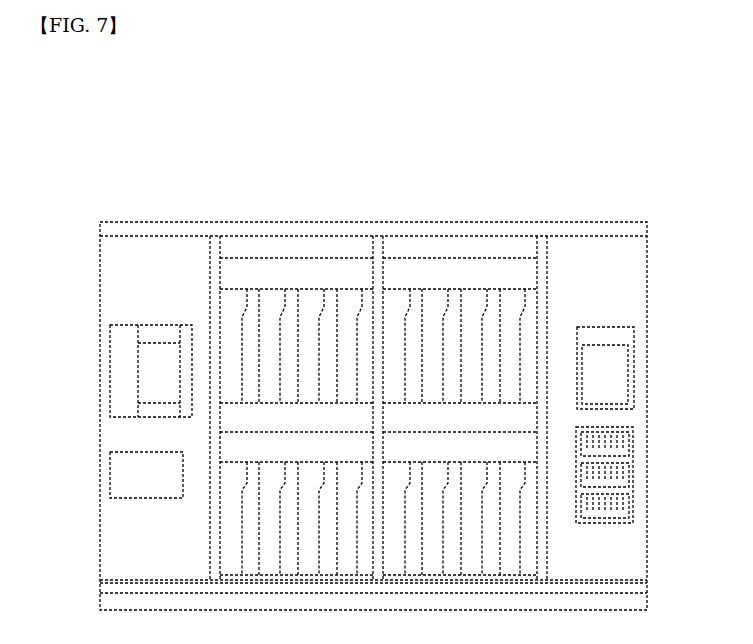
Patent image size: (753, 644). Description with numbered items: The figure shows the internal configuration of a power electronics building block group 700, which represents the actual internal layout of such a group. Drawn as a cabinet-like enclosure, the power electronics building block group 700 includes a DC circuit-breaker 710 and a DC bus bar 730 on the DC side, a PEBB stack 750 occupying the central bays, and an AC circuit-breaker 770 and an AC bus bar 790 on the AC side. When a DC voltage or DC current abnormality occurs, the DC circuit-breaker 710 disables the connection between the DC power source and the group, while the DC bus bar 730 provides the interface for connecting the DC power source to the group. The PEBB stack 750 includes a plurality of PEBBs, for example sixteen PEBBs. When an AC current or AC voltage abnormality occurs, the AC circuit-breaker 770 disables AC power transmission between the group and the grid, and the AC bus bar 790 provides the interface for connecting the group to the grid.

The power electronics building block group 700 is at (68, 115).
The DC circuit-breaker 710 is at (120, 361).
The DC bus bar 730 is at (120, 474).
The PEBB stack 750 is at (275, 290).
The AC circuit-breaker 770 is at (617, 373).
The AC bus bar 790 is at (627, 505).